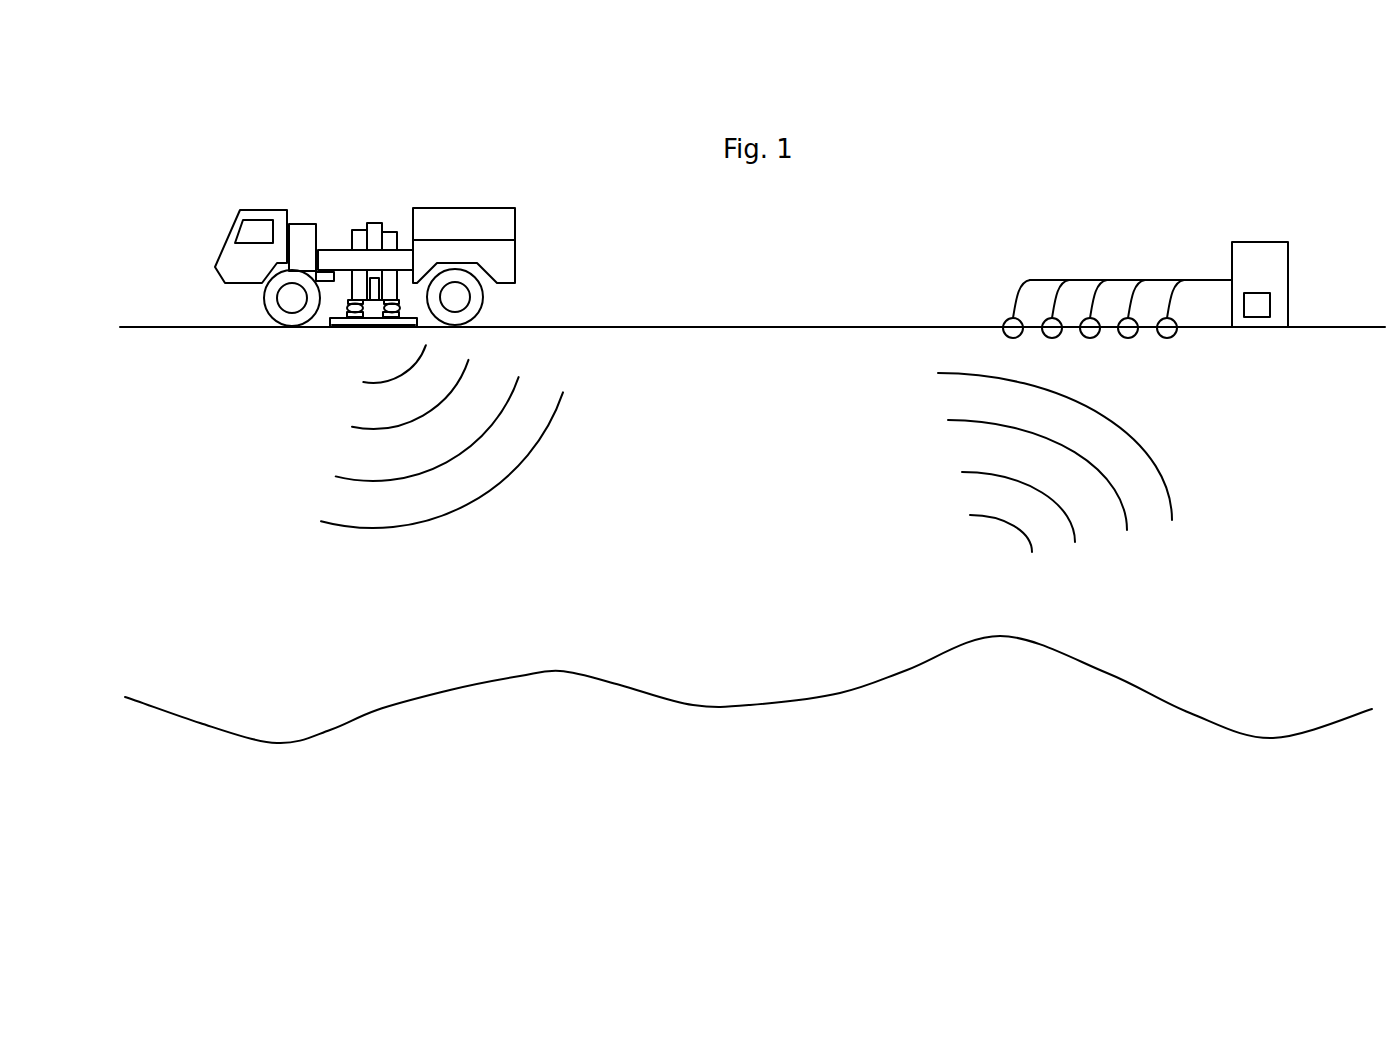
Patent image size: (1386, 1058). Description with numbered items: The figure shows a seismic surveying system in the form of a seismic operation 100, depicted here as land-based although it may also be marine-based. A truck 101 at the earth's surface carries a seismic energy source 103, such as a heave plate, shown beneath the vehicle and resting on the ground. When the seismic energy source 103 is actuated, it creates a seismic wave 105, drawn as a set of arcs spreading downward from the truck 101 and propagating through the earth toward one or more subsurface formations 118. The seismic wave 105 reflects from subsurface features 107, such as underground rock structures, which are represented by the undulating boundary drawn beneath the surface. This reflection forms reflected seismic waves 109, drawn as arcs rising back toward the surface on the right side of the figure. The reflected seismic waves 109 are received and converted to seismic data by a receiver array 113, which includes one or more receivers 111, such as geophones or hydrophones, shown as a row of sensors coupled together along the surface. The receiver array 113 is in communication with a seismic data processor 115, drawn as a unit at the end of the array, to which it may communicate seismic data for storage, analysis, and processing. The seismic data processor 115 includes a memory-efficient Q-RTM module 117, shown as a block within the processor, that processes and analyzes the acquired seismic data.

The seismic operation 100 is at (888, 163).
The truck 101 is at (516, 235).
The seismic energy source 103 is at (352, 332).
The seismic wave 105 is at (313, 472).
The subsurface features 107 is at (748, 710).
The reflected seismic waves 109 is at (1155, 448).
The receivers 111 is at (1000, 315).
The receiver array 113 is at (1117, 273).
The seismic data processor 115 is at (1243, 235).
The memory-efficient Q-RTM module 117 is at (1270, 307).
The subsurface formations 118 is at (257, 790).